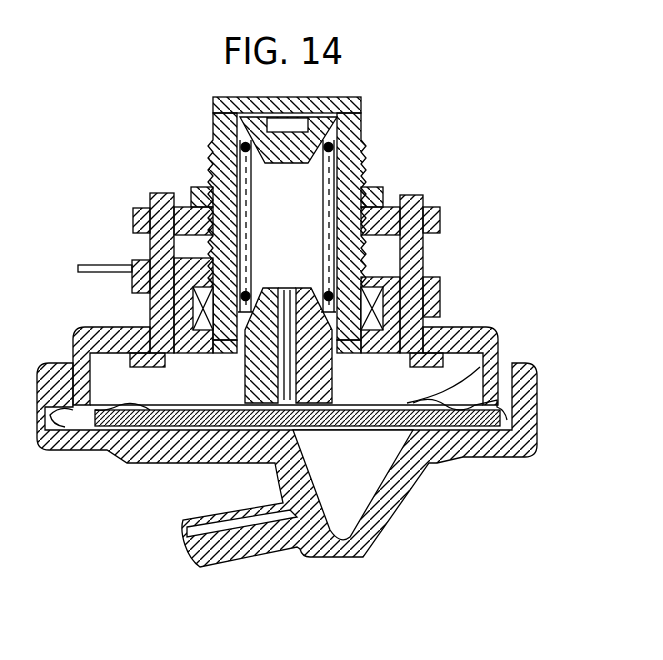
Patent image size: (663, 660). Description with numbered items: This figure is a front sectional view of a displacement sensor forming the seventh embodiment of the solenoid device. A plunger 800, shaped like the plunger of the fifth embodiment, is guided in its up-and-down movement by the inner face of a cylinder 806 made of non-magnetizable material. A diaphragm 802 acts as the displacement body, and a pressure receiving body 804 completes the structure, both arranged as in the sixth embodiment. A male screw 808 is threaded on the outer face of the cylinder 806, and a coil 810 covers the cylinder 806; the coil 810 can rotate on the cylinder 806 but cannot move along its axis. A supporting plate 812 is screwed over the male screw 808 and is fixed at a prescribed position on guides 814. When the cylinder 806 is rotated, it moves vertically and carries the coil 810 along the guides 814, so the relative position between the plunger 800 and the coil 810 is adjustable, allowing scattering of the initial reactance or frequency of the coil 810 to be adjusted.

The plunger 800 is at (243, 393).
The diaphragm 802 is at (455, 463).
The pressure receiving body 804 is at (496, 356).
The cylinder 806 is at (361, 97).
The male screw 808 is at (361, 165).
The coil 810 is at (440, 288).
The supporting plate 812 is at (440, 220).
The guides 814 is at (162, 193).